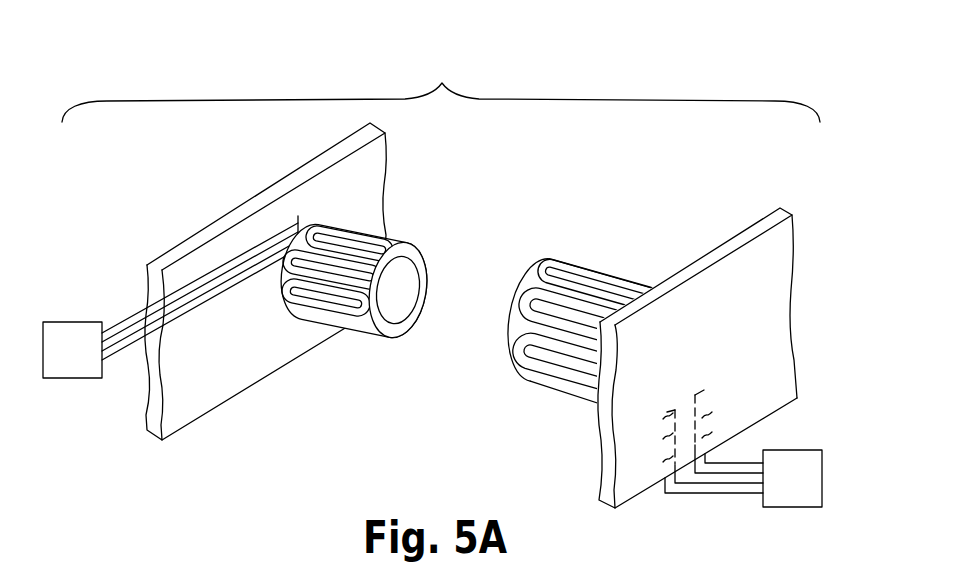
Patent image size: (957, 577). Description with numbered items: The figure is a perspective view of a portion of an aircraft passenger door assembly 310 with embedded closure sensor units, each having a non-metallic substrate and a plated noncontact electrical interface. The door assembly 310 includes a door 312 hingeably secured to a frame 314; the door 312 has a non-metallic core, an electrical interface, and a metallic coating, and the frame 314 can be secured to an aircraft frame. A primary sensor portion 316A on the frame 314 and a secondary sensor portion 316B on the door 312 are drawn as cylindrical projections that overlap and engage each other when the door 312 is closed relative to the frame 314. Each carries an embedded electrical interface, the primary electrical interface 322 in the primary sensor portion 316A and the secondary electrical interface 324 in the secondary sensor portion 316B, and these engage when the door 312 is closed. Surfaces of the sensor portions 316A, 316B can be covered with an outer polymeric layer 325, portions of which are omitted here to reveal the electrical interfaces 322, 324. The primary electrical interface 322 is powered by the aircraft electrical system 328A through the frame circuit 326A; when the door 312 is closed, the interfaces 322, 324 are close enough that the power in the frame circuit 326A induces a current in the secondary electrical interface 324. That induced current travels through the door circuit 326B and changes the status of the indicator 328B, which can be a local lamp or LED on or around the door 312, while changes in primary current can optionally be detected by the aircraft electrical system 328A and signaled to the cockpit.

The door assembly 310 is at (441, 90).
The door 312 is at (205, 212).
The frame 314 is at (827, 235).
The primary sensor portion 316A is at (566, 410).
The secondary sensor portion 316B is at (357, 356).
The primary electrical interface 322 is at (551, 258).
The secondary electrical interface 324 is at (389, 243).
The outer polymeric layer 325 is at (405, 339).
The frame circuit 326A is at (730, 497).
The door circuit 326B is at (200, 302).
The aircraft electrical system 328A is at (853, 460).
The indicator 328B is at (68, 321).